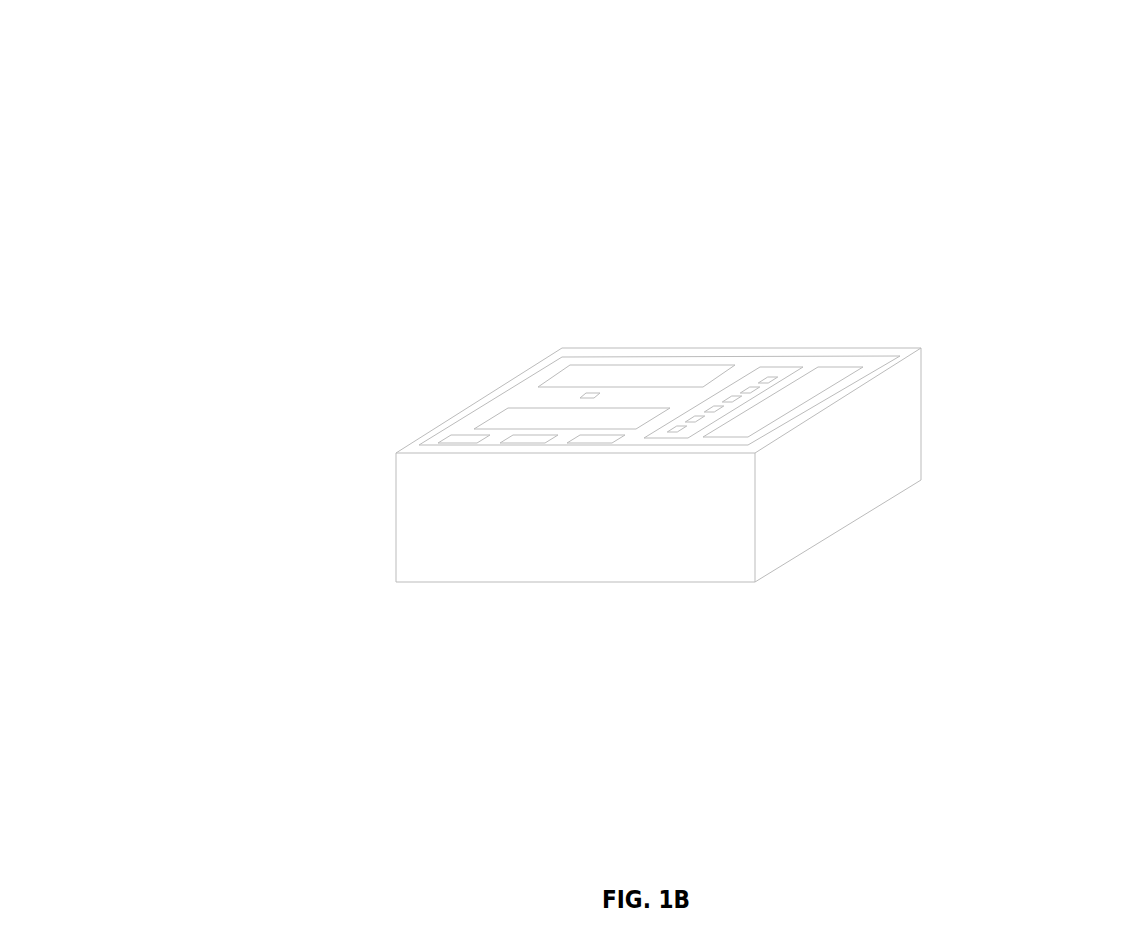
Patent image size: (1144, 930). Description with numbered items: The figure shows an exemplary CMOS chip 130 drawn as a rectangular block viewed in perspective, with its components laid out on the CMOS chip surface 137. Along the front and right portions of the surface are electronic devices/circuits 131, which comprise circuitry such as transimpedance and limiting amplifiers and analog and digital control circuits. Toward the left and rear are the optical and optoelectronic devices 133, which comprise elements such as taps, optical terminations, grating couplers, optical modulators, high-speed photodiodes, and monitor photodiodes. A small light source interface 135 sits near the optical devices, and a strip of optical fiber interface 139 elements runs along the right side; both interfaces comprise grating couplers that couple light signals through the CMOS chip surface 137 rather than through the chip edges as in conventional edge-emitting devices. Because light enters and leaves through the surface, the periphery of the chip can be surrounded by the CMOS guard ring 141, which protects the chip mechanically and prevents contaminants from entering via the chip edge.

The CMOS chip 130 is at (262, 105).
The electronic devices/circuits 131 is at (490, 630).
The optical and optoelectronic devices 133 is at (563, 372).
The light source interface 135 is at (592, 393).
The CMOS chip surface 137 is at (746, 363).
The optical fiber interface 139 is at (773, 367).
The CMOS guard ring 141 is at (910, 376).